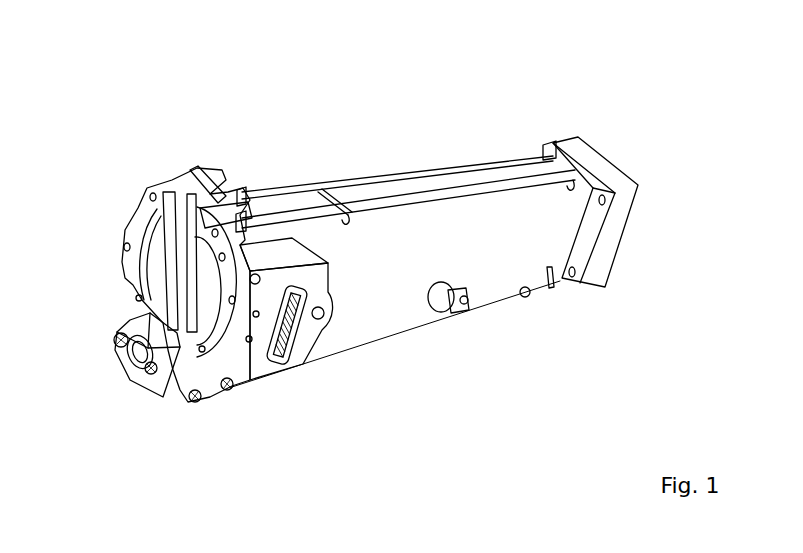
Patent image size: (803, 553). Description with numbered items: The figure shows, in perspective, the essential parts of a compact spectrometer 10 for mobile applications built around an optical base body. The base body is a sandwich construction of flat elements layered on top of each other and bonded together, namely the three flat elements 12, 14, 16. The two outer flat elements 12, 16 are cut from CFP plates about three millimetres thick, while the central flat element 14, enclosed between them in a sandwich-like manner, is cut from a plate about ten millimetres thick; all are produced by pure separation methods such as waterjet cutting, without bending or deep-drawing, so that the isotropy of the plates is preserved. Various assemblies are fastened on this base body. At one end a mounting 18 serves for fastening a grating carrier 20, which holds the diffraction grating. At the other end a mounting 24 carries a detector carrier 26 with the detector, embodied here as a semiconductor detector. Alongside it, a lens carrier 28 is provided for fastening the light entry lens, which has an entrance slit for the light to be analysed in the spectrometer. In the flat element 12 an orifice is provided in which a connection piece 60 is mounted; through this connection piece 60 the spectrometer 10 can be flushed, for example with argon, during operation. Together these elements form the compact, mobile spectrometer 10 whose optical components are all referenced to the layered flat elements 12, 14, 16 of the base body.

The spectrometer 10 is at (238, 76).
The flat element 12 is at (402, 295).
The flat element 14 is at (448, 187).
The flat element 16 is at (503, 163).
The mounting 18 is at (597, 210).
The grating carrier 20 is at (600, 147).
The mounting 24 is at (278, 243).
The detector carrier 26 is at (258, 370).
The lens carrier 28 is at (167, 330).
The connection piece 60 is at (463, 315).